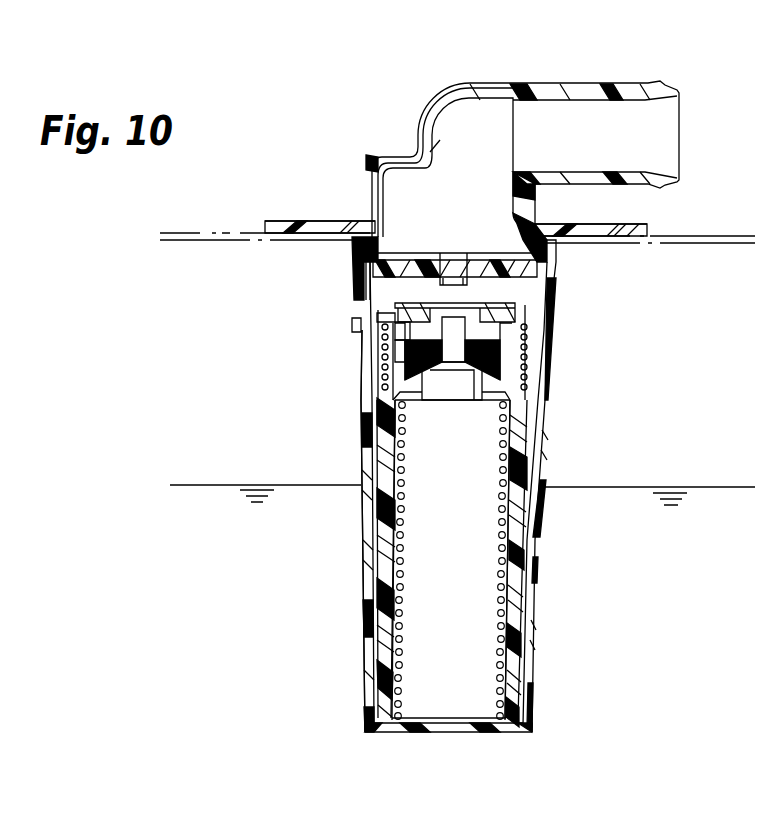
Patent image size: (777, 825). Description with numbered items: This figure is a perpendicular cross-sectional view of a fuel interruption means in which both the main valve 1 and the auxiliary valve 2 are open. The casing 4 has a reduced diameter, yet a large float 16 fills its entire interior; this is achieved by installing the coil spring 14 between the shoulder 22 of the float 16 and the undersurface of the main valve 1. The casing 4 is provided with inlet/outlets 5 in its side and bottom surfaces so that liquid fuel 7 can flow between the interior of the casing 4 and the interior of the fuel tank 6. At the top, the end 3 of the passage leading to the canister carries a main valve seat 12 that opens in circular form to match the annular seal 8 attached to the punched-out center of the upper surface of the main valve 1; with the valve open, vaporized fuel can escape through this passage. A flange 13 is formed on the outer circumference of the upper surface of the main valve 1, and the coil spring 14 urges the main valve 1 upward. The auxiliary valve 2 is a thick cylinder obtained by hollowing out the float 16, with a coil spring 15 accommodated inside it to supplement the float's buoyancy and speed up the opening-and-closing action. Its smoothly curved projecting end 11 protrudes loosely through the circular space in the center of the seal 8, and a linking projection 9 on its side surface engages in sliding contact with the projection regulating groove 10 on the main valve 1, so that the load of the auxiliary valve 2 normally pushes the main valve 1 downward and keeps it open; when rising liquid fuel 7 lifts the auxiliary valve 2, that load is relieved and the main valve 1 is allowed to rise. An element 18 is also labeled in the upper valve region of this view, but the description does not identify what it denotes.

The main valve 1 is at (530, 322).
The auxiliary valve 2 is at (500, 382).
The end of the passage leading to the canister 3 is at (403, 188).
The casing 4 is at (542, 440).
The inlet/outlets 5 is at (462, 735).
The fuel tank 6 is at (241, 349).
The liquid fuel 7 is at (284, 612).
The annular seal 8 is at (505, 302).
The linking projection 9 is at (395, 348).
The projection regulating groove 10 is at (393, 330).
The projecting end 11 is at (457, 307).
The main valve seat 12 is at (420, 268).
The flange 13 is at (392, 312).
The coil spring 14 is at (525, 345).
The coil spring 15 is at (497, 540).
The float 16 is at (520, 622).
The valve head 18 is at (462, 258).
The shoulder 22 is at (523, 395).